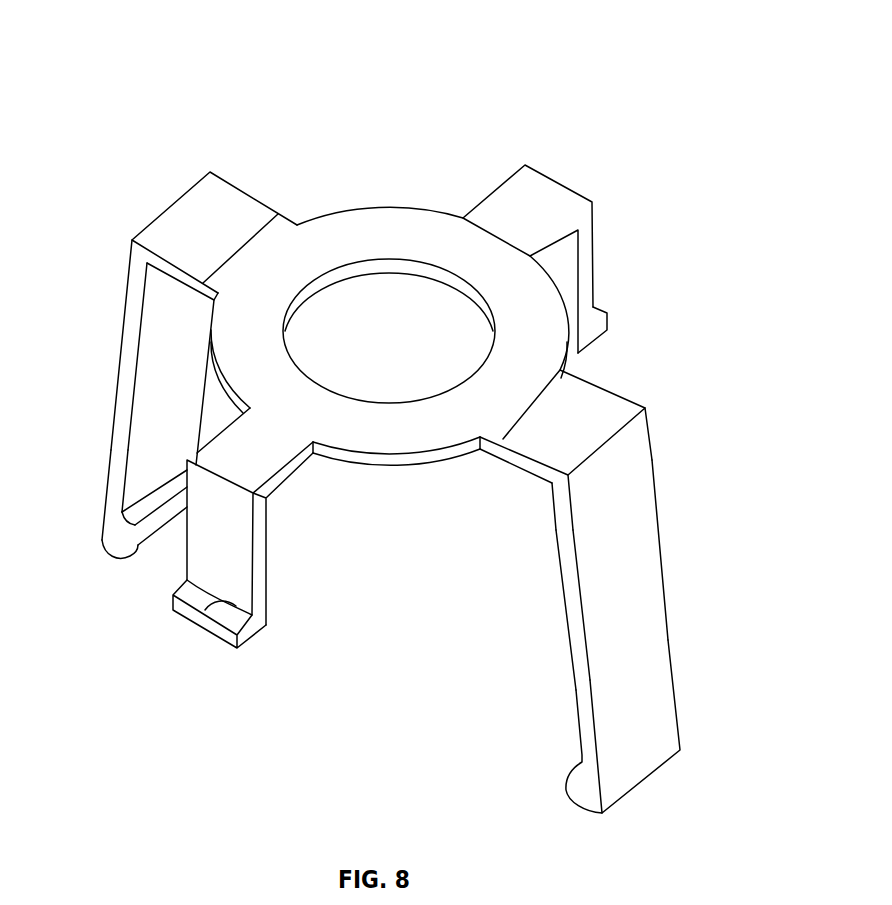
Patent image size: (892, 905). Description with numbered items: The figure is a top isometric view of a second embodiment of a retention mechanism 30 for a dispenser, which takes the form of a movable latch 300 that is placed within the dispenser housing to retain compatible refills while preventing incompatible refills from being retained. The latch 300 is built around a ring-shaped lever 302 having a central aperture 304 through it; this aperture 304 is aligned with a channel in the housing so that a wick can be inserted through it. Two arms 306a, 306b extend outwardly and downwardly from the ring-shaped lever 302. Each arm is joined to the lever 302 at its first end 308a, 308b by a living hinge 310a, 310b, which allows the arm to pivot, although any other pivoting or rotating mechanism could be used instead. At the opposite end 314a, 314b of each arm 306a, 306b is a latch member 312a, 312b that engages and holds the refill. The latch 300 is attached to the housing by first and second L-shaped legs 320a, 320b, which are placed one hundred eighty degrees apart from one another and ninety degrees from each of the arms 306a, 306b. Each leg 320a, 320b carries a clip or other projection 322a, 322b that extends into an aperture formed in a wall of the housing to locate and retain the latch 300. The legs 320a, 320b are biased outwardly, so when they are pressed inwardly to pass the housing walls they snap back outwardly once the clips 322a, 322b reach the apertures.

The retention mechanism 30 is at (125, 44).
The movable latch 300 is at (663, 266).
The ring-shaped lever 302 is at (411, 222).
The aperture 304 is at (362, 318).
The first arm 306a is at (128, 313).
The second arm 306b is at (630, 523).
The first end of first arm 308a is at (130, 257).
The first end of second arm 308b is at (632, 445).
The living hinge 310a is at (263, 207).
The living hinge 310b is at (563, 393).
The latch member 312a is at (120, 543).
The latch member 312b is at (578, 783).
The end of first arm 314a is at (108, 493).
The end of second arm 314b is at (667, 740).
The first L-shaped leg 320a is at (220, 560).
The second L-shaped leg 320b is at (584, 237).
The clip 322a is at (220, 613).
The clip 322b is at (604, 325).